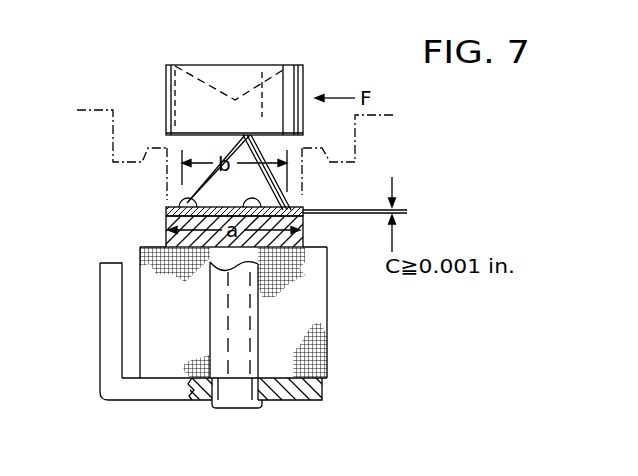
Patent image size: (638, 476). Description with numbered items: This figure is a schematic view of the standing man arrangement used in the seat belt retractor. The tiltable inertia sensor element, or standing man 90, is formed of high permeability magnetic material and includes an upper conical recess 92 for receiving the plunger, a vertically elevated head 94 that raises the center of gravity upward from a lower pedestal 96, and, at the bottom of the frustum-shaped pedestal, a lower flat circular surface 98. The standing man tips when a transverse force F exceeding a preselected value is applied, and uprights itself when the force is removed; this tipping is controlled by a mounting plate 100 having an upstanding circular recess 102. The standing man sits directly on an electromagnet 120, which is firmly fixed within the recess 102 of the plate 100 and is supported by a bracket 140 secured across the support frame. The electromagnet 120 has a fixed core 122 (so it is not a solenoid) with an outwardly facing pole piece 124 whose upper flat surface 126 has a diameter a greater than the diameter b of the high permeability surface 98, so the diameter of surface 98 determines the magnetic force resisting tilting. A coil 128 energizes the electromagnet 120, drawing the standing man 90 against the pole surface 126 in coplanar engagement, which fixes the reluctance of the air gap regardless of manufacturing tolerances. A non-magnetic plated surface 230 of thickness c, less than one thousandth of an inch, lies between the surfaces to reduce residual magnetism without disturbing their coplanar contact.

The standing man 90 is at (306, 80).
The upper conical recess 92 is at (263, 70).
The vertically elevated head 94 is at (180, 82).
The lower pedestal 96 is at (278, 209).
The lower flat circular surface 98 is at (305, 232).
The mounting plate 100 is at (93, 110).
The upstanding circular recess 102 is at (162, 183).
The electromagnet 120 is at (336, 338).
The fixed core 122 is at (253, 317).
The pole piece 124 is at (276, 250).
The upper flat surface 126 is at (180, 200).
The coil 128 is at (306, 380).
The bracket 140 is at (157, 395).
The plated surface 230 is at (243, 207).